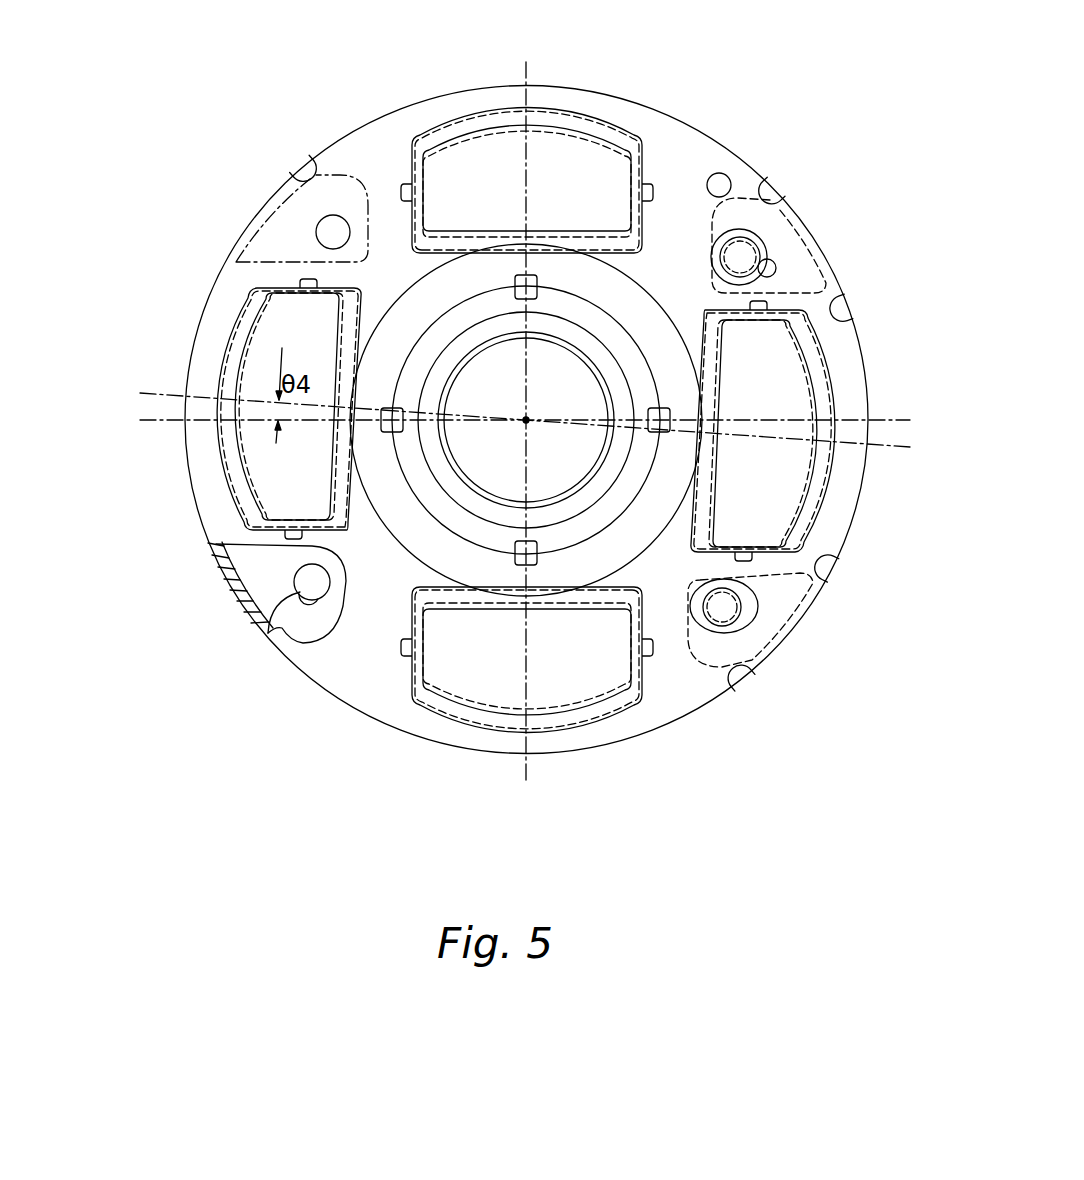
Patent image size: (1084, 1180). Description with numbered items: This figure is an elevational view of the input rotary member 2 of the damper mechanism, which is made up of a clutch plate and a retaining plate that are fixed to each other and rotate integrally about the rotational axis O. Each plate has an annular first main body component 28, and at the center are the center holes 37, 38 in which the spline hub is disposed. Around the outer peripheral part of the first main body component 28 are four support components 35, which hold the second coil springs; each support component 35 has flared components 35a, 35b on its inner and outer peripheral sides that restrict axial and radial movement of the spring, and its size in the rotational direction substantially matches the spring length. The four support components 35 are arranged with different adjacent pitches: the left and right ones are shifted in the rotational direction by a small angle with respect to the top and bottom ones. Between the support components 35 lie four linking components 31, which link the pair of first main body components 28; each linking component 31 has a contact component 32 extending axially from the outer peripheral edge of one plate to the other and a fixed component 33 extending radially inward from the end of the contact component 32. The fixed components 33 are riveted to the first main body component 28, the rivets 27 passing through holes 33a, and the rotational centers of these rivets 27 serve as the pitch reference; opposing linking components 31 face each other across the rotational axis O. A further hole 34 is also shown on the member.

The input rotary member 2 is at (709, 90).
The rivet 27 is at (748, 257).
The first main body component 28 is at (705, 153).
The linking component 31 is at (250, 200).
The contact component 32 is at (214, 565).
The fixed component 33 is at (265, 577).
The hole 33a is at (267, 622).
The through hole 34 is at (777, 258).
The support component 35 is at (463, 108).
The flared component 35a is at (598, 243).
The flared component 35b is at (612, 115).
The center hole 37 is at (462, 473).
The center hole 38 is at (595, 473).
The rotational axis O is at (528, 419).